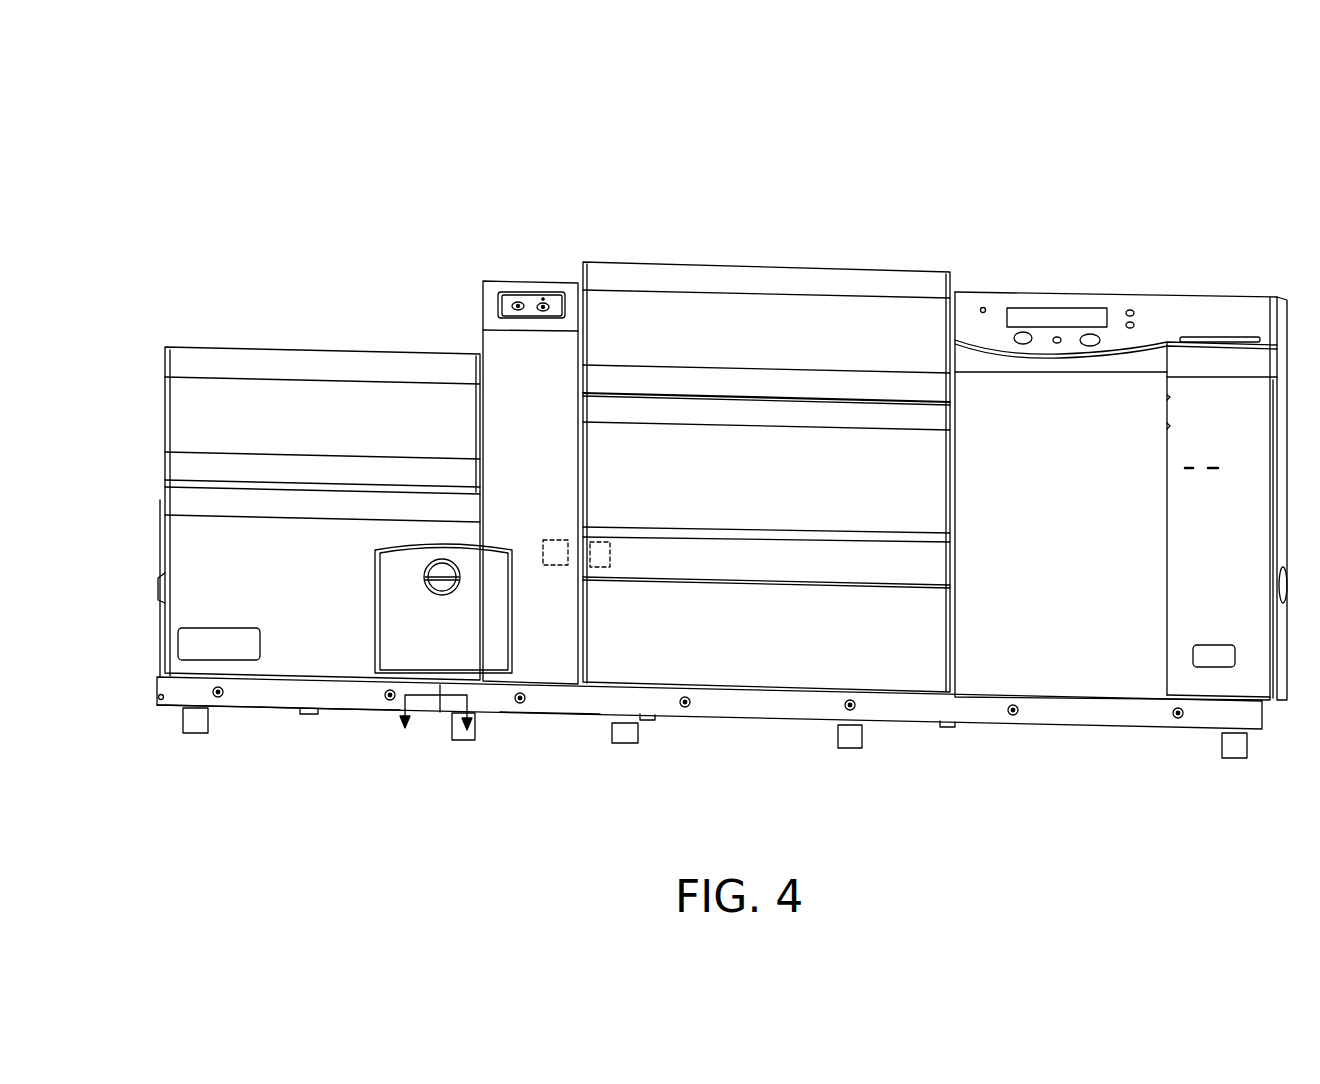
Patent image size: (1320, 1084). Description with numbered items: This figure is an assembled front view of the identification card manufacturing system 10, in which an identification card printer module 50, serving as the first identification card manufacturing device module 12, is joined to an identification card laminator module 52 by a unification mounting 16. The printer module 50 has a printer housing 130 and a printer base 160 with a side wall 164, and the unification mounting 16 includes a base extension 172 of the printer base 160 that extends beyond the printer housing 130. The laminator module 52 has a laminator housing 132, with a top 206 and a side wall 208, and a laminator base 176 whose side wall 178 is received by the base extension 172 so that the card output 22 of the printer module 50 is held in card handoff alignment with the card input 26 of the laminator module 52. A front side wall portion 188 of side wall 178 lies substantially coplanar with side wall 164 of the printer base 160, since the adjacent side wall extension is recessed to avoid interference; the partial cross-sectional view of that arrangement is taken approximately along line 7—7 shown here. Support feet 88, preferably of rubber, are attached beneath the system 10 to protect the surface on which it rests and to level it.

The identification card manufacturing system 10 is at (396, 152).
The identification card laminator module 52 is at (237, 347).
The first identification card manufacturing device module 12 is at (363, 350).
The laminator housing 132 is at (507, 282).
The top 206 is at (528, 280).
The printer housing 130 is at (715, 265).
The identification card printer module 50 is at (900, 270).
The side wall 208 is at (498, 406).
The card input 26 is at (553, 530).
The card output 22 is at (612, 557).
The unification mounting 16 is at (478, 650).
The line 7— 7 is at (439, 728).
The support feet 88 is at (185, 727).
The side wall 178 is at (240, 697).
The laminator base 176 is at (300, 697).
The front side wall portion 188 is at (358, 697).
The base extension 172 is at (553, 705).
The side wall 164 is at (775, 710).
The printer base 160 is at (1130, 718).